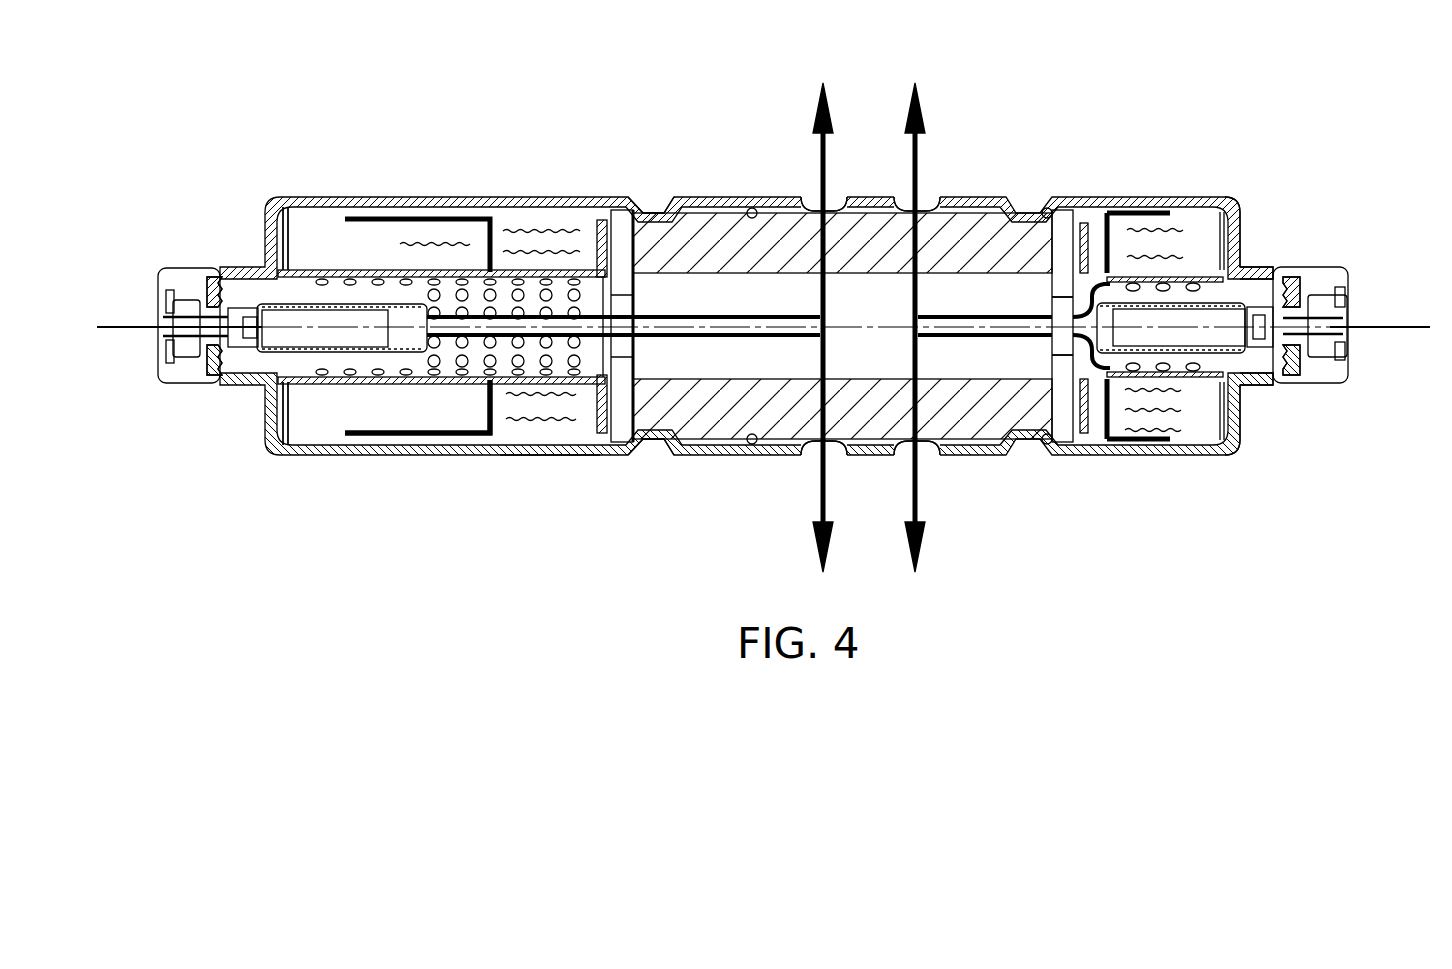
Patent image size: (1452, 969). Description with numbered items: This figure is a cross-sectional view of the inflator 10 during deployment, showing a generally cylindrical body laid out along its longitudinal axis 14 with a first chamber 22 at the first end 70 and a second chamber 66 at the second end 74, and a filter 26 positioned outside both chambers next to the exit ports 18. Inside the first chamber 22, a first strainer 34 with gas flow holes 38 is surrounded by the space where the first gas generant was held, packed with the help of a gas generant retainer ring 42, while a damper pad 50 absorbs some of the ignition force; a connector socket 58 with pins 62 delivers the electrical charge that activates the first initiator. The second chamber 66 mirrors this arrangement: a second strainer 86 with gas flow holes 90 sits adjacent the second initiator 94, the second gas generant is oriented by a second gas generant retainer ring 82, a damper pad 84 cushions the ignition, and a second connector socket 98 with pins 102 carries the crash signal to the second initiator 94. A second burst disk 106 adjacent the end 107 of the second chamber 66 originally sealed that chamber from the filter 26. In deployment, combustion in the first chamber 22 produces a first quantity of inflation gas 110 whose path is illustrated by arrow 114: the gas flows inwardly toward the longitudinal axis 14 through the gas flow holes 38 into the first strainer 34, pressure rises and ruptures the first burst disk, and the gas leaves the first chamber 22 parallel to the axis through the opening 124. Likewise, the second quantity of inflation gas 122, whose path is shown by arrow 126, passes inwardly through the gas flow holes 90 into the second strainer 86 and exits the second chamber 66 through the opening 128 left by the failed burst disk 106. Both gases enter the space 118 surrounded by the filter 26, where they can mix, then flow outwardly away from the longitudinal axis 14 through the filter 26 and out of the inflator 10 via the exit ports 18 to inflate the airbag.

The inflator 10 is at (556, 470).
The longitudinal axis 14 is at (1386, 332).
The exit ports 18 is at (802, 197).
The first chamber 22 is at (316, 435).
The filter 26 is at (718, 208).
The first strainer 34 is at (586, 432).
The gas flow holes 38 is at (401, 432).
The gas generant retainer ring 42 is at (291, 200).
The damper pad 50 is at (598, 222).
The connector socket 58 is at (180, 282).
The pins 62 is at (185, 322).
The second chamber 66 is at (1203, 432).
The first end 70 is at (250, 203).
The second end 74 is at (1265, 185).
The second gas generant retainer ring 82 is at (1245, 437).
The damper pad 84 is at (1097, 222).
The second strainer 86 is at (1098, 437).
The gas flow holes 90 is at (1196, 222).
The second initiator 94 is at (1320, 266).
The second connector socket 98 is at (1328, 278).
The pins 102 is at (1323, 317).
The second burst disk 106 is at (1063, 222).
The end 107 is at (622, 432).
The first quantity of inflation gas 110 is at (398, 242).
The arrow 114 is at (455, 243).
The space 118 is at (798, 309).
The second quantity of inflation gas 122 is at (1177, 222).
The opening 124 is at (651, 208).
The arrow 126 is at (1141, 218).
The opening 128 is at (1058, 298).